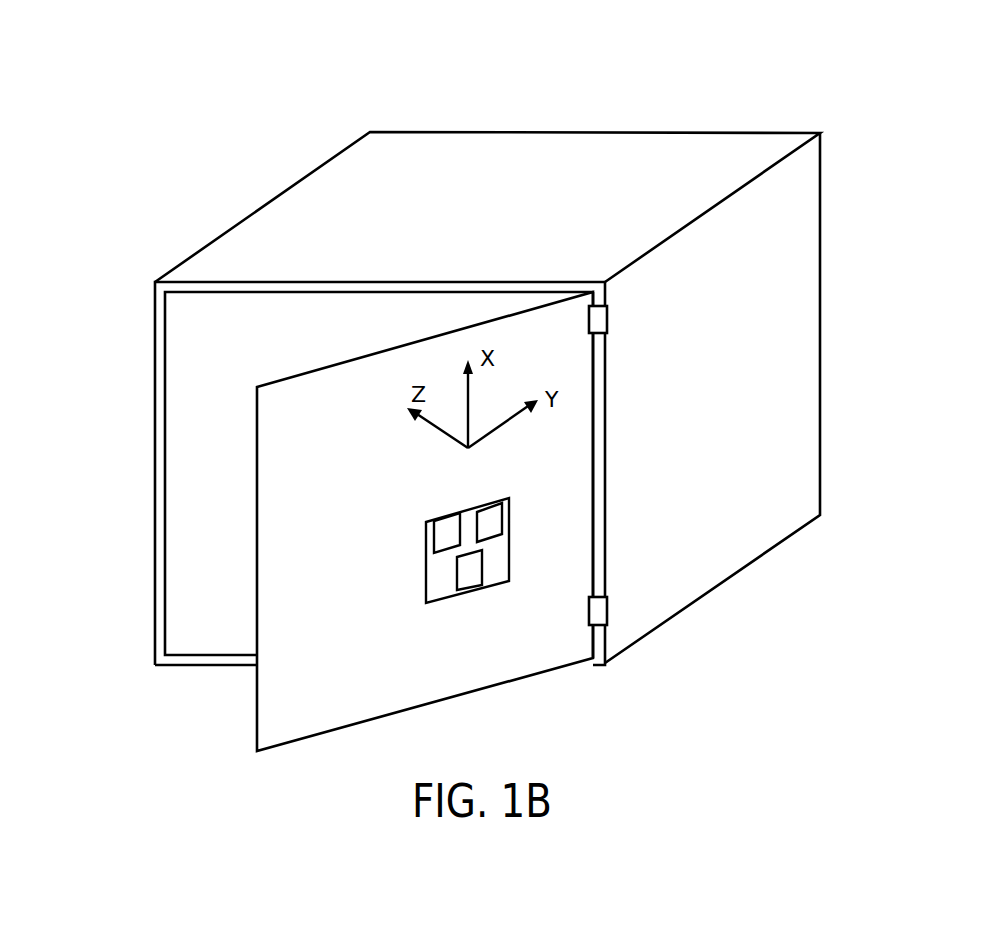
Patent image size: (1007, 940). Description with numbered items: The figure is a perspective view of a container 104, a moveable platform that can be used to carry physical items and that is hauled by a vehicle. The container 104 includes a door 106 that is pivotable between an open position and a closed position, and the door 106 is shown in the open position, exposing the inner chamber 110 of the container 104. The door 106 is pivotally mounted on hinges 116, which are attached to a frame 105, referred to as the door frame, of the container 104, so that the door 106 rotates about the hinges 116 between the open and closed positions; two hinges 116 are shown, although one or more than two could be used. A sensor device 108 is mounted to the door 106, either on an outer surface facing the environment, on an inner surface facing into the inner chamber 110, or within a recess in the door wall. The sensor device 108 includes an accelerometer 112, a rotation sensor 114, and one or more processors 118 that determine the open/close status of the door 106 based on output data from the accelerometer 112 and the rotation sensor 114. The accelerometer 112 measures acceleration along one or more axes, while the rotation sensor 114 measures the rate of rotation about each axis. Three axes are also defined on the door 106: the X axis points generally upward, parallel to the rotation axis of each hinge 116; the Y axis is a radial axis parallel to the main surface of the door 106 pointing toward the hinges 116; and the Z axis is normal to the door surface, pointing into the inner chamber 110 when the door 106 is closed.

The container 104 is at (527, 150).
The frame 105 is at (157, 325).
The door 106 is at (305, 390).
The sensor device 108 is at (468, 512).
The inner chamber 110 is at (198, 500).
The accelerometer 112 is at (434, 545).
The rotation sensor 114 is at (502, 520).
The hinges 116 is at (607, 320).
The processors 118 is at (456, 573).